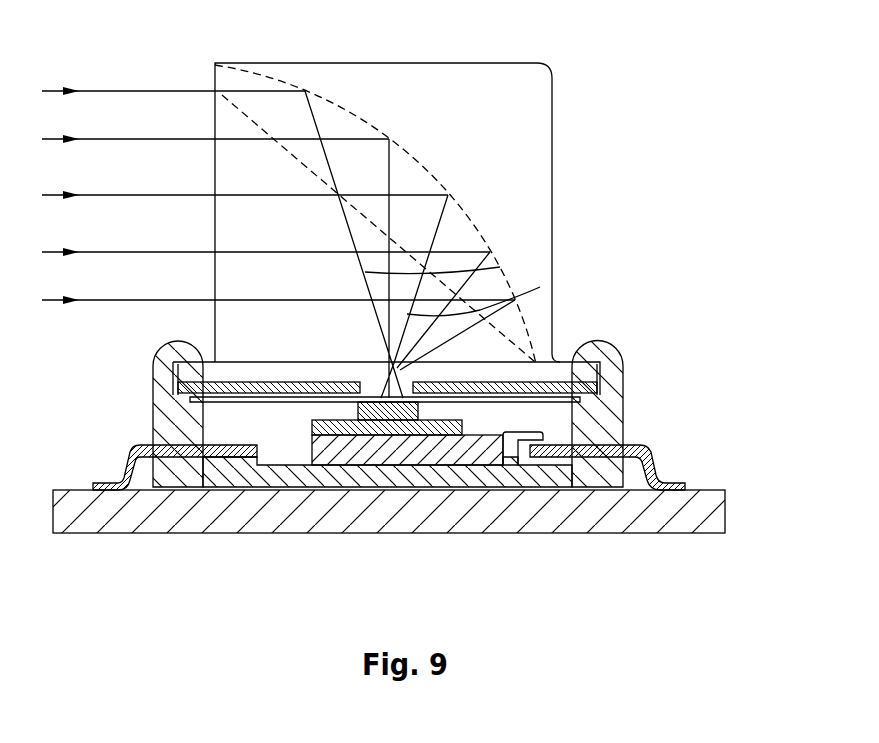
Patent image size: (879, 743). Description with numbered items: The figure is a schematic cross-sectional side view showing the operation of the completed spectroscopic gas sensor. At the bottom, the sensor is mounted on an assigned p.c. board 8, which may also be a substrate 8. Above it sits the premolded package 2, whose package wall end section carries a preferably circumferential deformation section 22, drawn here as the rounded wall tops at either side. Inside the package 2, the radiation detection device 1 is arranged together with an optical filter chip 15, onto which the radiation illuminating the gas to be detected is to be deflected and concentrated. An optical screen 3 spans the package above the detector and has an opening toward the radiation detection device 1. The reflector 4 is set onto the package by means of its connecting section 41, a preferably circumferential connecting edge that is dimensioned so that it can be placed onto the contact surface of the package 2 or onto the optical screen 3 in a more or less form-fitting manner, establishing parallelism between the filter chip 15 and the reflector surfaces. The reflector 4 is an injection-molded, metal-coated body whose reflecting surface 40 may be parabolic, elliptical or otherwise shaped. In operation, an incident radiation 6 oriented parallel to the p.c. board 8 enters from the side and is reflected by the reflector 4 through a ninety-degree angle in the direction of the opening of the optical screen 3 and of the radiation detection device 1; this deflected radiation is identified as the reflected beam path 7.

The radiation detection device 1 is at (415, 470).
The package 2 is at (220, 470).
The optical screen 3 is at (300, 385).
The reflector 4 is at (570, 100).
The incident radiation 6 is at (157, 91).
The reflected beam path 7 is at (500, 267).
The p.c. board 8 is at (306, 507).
The optical filter chip 15 is at (437, 434).
The deformation section 22 is at (176, 347).
The reflecting surface 40 is at (408, 147).
The connecting section 41 is at (190, 373).